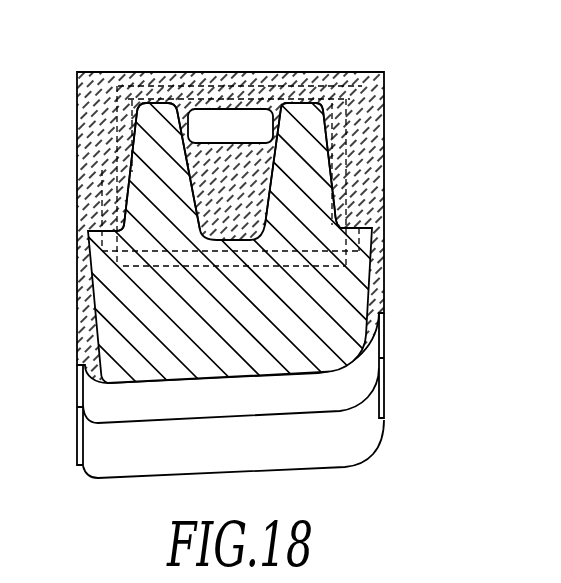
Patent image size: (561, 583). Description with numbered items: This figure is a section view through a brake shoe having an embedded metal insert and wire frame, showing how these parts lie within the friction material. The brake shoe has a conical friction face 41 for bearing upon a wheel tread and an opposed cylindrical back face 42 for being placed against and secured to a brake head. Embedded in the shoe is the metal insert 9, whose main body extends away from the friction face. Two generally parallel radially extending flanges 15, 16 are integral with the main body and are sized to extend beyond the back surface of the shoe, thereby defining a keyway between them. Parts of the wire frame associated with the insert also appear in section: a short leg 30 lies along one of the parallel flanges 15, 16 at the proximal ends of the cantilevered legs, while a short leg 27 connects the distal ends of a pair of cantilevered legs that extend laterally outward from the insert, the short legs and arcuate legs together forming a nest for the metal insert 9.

The metal insert 9 is at (340, 340).
The radially extending flange 15 is at (316, 192).
The radially extending flange 16 is at (134, 158).
The short leg 27 is at (133, 265).
The short leg 30 is at (229, 72).
The friction face 41 is at (328, 452).
The back face 42 is at (147, 72).